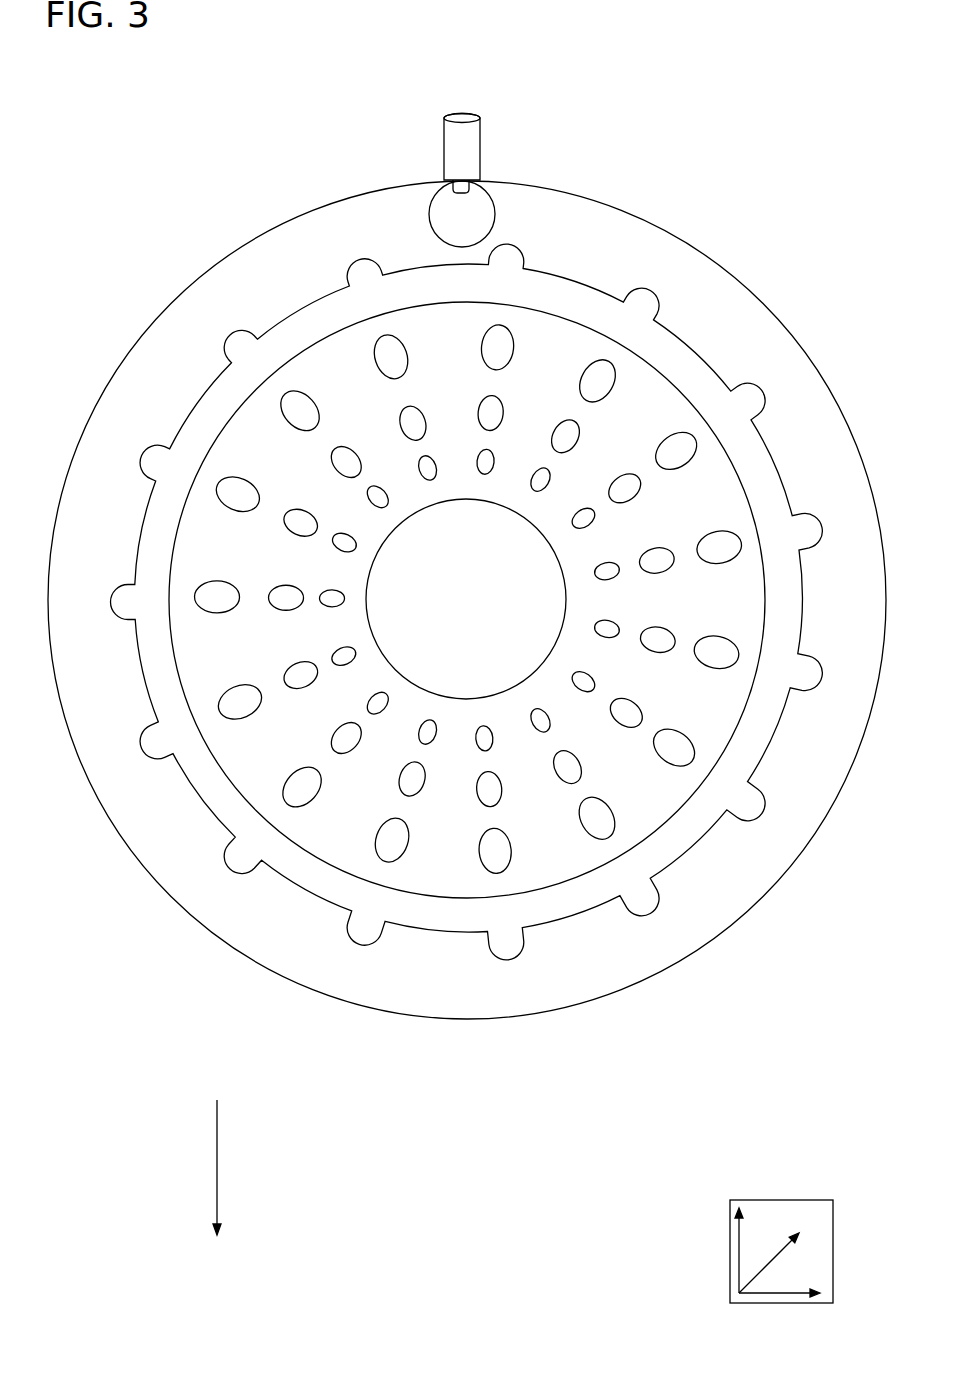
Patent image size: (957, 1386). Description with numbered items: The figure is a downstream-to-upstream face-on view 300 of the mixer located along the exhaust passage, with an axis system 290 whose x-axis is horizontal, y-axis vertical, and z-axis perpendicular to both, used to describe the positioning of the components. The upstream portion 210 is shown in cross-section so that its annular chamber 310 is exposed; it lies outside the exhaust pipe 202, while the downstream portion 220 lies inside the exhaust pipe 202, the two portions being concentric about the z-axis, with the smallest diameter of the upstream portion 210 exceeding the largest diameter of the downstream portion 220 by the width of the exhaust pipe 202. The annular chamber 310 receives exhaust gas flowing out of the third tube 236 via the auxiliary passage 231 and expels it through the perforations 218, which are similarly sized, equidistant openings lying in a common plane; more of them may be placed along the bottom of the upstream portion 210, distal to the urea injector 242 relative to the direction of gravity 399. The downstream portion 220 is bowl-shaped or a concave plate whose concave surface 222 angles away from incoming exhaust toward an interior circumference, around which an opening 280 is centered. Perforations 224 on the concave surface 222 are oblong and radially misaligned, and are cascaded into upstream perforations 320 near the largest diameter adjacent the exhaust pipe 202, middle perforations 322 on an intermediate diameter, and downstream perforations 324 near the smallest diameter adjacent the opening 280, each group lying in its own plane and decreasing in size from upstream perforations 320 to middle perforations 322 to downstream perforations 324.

The face-on view 300 is at (778, 27).
The annular chamber 310 is at (115, 520).
The urea injector 242 is at (462, 113).
The third tube 236 is at (497, 223).
The upstream portion 210 is at (95, 313).
The perforations 218 is at (238, 311).
The exhaust pipe 202 is at (572, 297).
The downstream portion 220 is at (317, 877).
The perforations 224 is at (738, 521).
The concave surface 222 is at (272, 565).
The opening 280 is at (573, 579).
The auxiliary passage 231 is at (484, 611).
The upstream perforations 320 is at (378, 370).
The middle perforations 322 is at (401, 424).
The downstream perforations 324 is at (418, 469).
The direction of gravity 399 is at (218, 1165).
The axis system 290 is at (795, 1200).